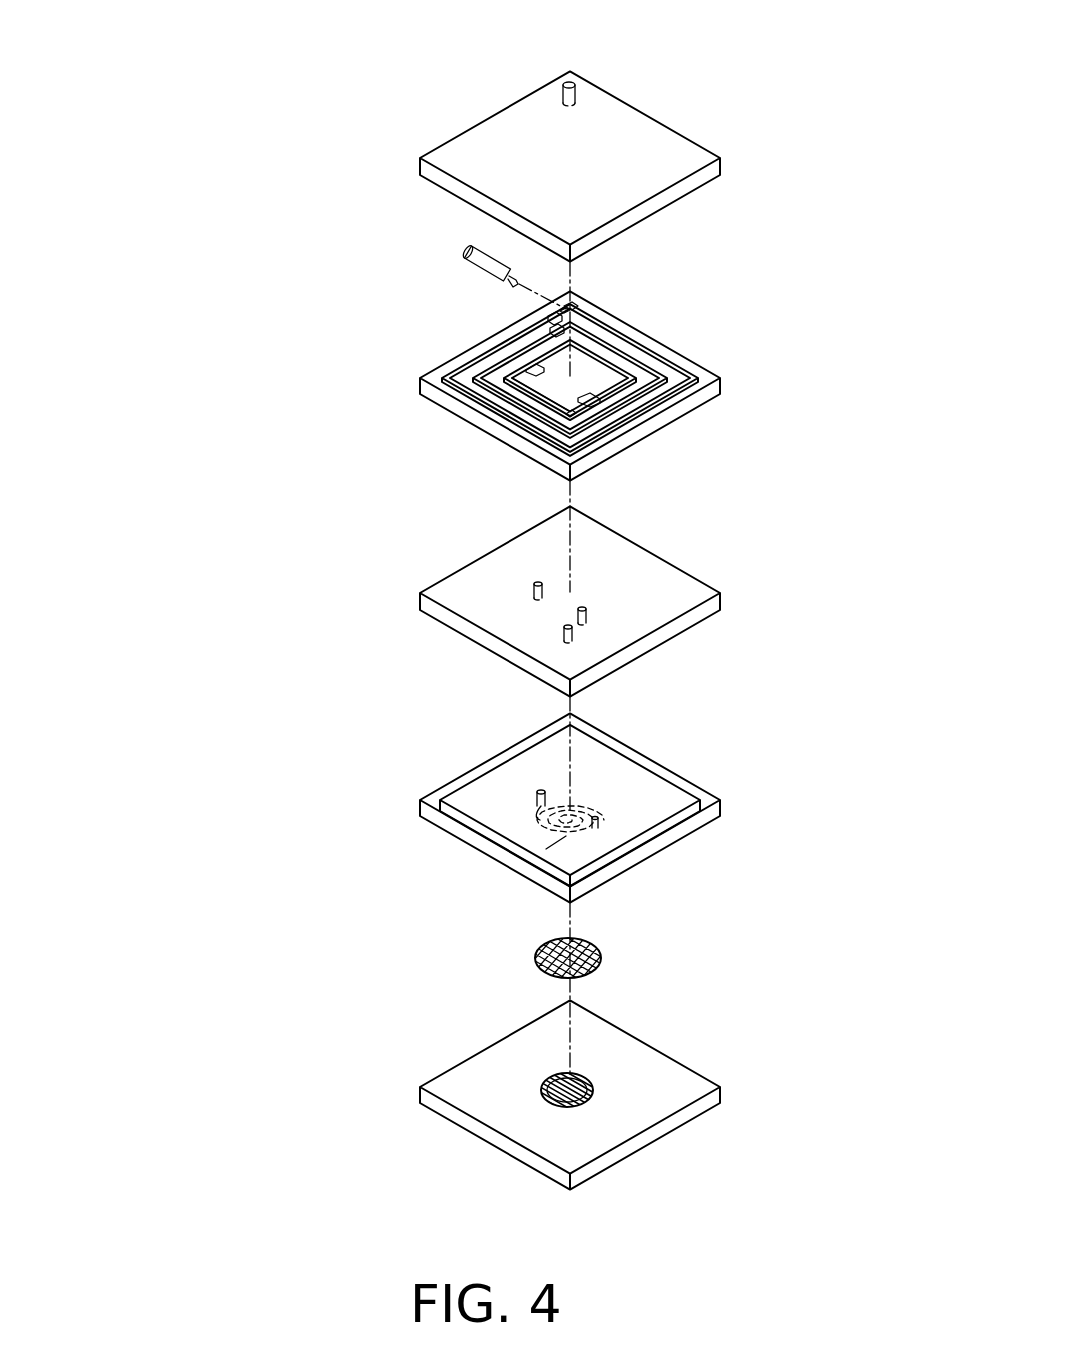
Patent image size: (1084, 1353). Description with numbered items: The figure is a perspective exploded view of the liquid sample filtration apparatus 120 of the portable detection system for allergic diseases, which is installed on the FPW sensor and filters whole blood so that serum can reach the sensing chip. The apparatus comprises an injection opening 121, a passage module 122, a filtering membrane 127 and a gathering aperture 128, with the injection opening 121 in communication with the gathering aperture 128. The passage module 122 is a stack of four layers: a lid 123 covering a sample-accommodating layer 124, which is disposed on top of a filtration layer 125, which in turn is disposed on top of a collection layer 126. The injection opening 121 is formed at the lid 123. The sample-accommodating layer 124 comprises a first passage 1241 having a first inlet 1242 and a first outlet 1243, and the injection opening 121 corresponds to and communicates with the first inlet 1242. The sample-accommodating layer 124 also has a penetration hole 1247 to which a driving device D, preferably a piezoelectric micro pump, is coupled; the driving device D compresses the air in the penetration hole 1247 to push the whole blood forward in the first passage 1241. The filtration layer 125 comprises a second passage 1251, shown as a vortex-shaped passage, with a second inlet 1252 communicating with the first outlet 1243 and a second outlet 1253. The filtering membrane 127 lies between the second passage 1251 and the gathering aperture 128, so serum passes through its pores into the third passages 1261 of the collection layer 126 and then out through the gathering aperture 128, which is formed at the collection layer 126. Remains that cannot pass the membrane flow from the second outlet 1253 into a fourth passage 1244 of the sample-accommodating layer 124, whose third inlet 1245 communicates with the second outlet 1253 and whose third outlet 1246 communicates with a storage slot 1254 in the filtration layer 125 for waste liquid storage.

The liquid sample filtration apparatus 120 is at (343, 90).
The injection opening 121 is at (569, 72).
The passage module 122 is at (276, 484).
The lid 123 is at (430, 177).
The sample-accommodating layer 124 is at (457, 408).
The first passage 1241 is at (652, 347).
The first inlet 1242 is at (574, 305).
The first outlet 1243 is at (600, 402).
The fourth passage 1244 is at (540, 400).
The third inlet 1245 is at (533, 366).
The third outlet 1246 is at (568, 413).
The penetration hole 1247 is at (553, 308).
The filtration layer 125 is at (460, 775).
The second passage 1251 is at (590, 805).
The second inlet 1252 is at (598, 822).
The second outlet 1253 is at (540, 790).
The storage slot 1254 is at (682, 791).
The collection layer 126 is at (448, 1063).
The third passages 1261 is at (590, 1105).
The filtering membrane 127 is at (602, 958).
The gathering aperture 128 is at (582, 1080).
The driving device D is at (466, 251).